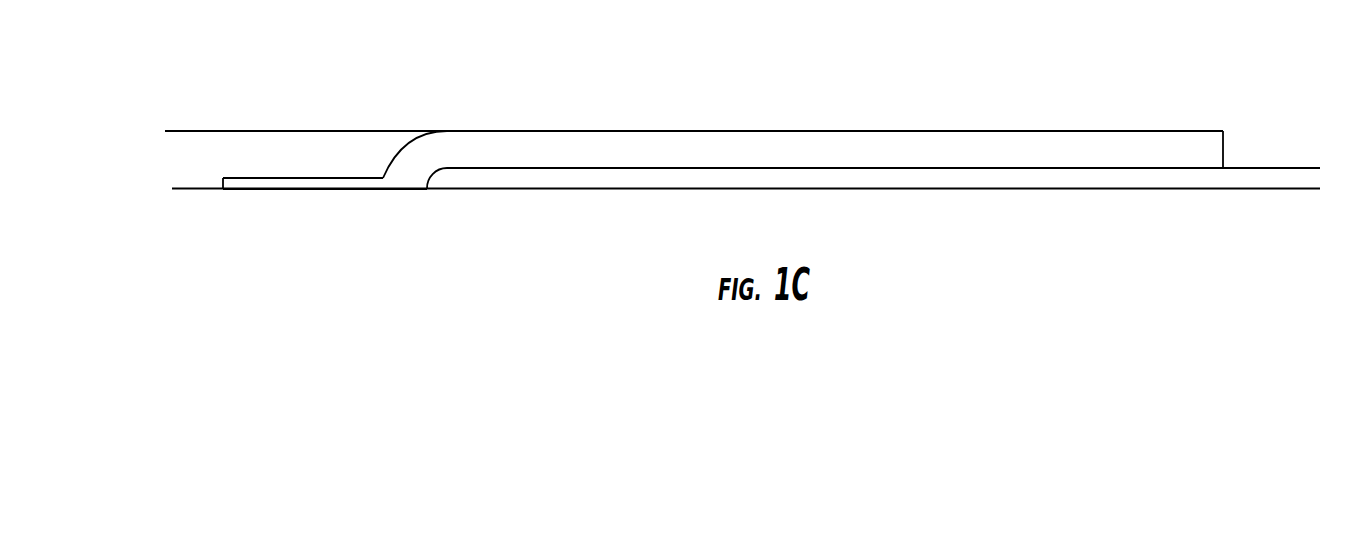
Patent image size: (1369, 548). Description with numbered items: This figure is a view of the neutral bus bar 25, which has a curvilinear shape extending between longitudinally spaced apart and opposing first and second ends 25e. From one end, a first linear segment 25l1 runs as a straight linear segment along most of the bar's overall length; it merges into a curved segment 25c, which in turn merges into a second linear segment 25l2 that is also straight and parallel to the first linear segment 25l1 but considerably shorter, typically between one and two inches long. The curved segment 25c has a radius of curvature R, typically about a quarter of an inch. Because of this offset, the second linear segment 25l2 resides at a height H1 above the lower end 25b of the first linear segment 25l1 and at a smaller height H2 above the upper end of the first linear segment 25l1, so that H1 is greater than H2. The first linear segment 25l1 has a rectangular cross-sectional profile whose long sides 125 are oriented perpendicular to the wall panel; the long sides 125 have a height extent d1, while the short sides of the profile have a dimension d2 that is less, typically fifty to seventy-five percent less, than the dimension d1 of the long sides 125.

The neutral bus bar 25 is at (742, 129).
The lower end of the first linear segment 25b is at (498, 131).
The curved segment 25c is at (407, 175).
The long sides 125 is at (540, 150).
The first linear segment 25l1 is at (800, 152).
The second linear segment 25l2 is at (287, 183).
The first and second ends 25e is at (220, 189).
The dimension of the long sides d1 is at (1070, 185).
The dimension of the short sides d2 is at (362, 155).
The height above the lower end H1 is at (187, 110).
The height above the upper end H2 is at (1265, 145).
The radius of curvature R is at (442, 173).